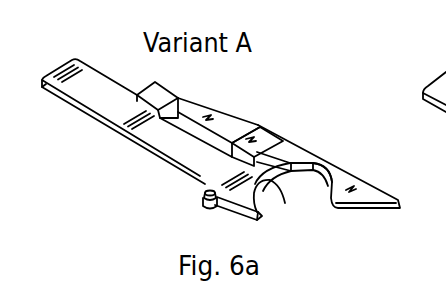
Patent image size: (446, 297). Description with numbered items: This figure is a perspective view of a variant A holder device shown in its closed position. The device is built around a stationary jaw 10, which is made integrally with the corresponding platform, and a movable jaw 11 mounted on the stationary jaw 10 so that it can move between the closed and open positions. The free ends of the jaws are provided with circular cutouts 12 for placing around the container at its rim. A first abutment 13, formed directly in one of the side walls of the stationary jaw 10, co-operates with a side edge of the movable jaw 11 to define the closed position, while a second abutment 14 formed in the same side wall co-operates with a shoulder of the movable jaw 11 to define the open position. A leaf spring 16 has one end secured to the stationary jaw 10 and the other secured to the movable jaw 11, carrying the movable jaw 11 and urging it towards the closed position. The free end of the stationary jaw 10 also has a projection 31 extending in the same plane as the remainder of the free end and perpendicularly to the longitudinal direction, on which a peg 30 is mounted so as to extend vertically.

The stationary jaw 10 is at (139, 142).
The movable jaw 11 is at (301, 161).
The circular cutout 12 is at (322, 166).
The first abutment 13 is at (266, 150).
The second abutment 14 is at (258, 203).
The leaf spring 16 is at (225, 118).
The peg 30 is at (204, 196).
The projection 31 is at (214, 213).